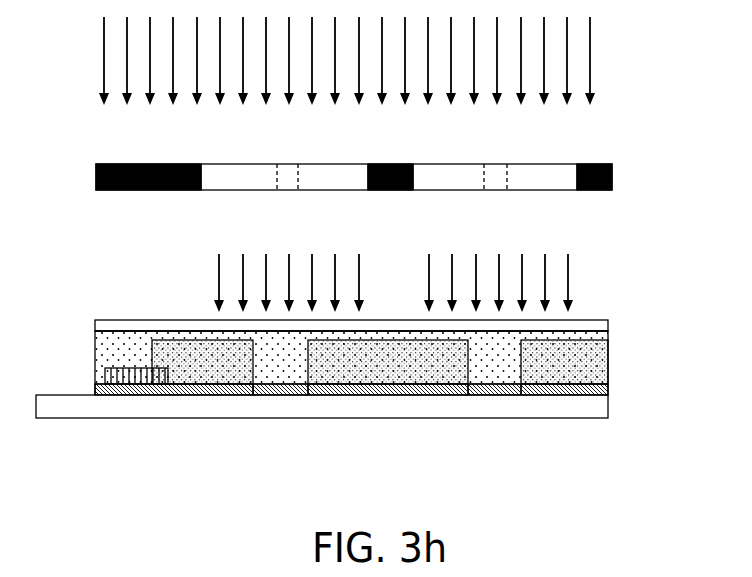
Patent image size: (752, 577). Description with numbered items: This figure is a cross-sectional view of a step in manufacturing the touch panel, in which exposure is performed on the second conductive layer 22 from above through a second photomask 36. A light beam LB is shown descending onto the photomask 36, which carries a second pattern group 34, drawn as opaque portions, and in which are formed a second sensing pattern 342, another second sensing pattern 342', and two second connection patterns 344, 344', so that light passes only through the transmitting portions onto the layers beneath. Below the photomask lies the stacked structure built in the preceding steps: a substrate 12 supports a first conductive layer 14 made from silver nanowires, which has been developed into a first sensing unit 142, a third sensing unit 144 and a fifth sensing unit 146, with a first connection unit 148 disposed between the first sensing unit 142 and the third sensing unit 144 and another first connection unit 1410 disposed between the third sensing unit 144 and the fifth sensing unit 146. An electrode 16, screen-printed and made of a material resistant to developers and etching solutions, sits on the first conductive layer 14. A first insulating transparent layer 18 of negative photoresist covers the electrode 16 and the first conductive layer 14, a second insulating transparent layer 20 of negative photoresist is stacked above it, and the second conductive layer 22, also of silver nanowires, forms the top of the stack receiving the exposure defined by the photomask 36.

The light beam LB is at (594, 77).
The second photomask 36 is at (623, 168).
The second pattern group 34 is at (96, 175).
The second sensing pattern 342 is at (284, 203).
The second connection pattern 344 is at (288, 157).
The second sensing pattern 342' is at (495, 203).
The second connection pattern 344' is at (499, 157).
The substrate 12 is at (608, 408).
The first conductive layer 14 is at (608, 392).
The first sensing unit 142 is at (173, 396).
The first connection unit 148 is at (280, 396).
The third sensing unit 144 is at (392, 396).
The first connection unit 1410 is at (492, 396).
The fifth sensing unit 146 is at (570, 396).
The electrode 16 is at (105, 375).
The first insulating transparent layer 18 is at (608, 372).
The second insulating transparent layer 20 is at (608, 334).
The second conductive layer 22 is at (608, 325).